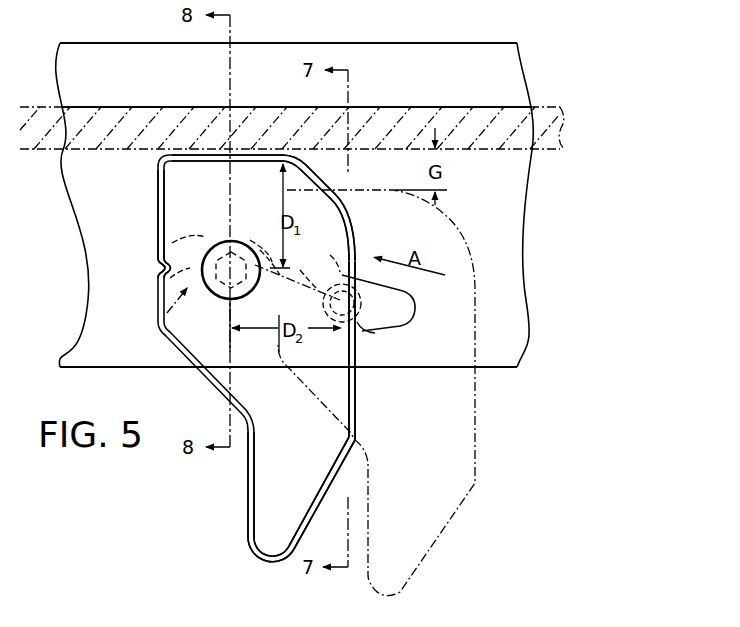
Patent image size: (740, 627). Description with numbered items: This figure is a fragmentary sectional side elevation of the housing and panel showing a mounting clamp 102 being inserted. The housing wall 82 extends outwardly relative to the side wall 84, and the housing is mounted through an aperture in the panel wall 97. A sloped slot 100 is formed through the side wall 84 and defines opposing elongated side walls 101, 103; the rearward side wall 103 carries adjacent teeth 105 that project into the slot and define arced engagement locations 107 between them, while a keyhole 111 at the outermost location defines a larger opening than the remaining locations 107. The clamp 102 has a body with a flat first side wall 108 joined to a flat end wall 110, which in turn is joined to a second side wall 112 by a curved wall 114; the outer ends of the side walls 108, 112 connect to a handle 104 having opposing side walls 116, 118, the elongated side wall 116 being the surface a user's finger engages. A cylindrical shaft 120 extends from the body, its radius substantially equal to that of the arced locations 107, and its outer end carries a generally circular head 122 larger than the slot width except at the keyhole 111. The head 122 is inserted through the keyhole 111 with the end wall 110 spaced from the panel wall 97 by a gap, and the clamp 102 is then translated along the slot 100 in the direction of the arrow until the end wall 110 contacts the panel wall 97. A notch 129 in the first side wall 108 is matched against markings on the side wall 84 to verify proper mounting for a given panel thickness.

The wall 82 is at (420, 43).
The side wall 84 is at (502, 200).
The panel wall 97 is at (548, 152).
The slot 100 is at (400, 289).
The side wall 101 is at (332, 252).
The mounting clamp 102 is at (210, 386).
The side wall 103 is at (167, 313).
The handle 104 is at (250, 547).
The tooth 105 is at (330, 268).
The arced engagement location 107 is at (266, 250).
The first side wall 108 is at (158, 205).
The end wall 110 is at (195, 152).
The keyhole 111 is at (388, 333).
The second side wall 112 is at (356, 390).
The curved wall 114 is at (343, 205).
The side wall 116 is at (248, 497).
The side wall 118 is at (342, 489).
The cylindrical shaft 120 is at (216, 243).
The head 122 is at (202, 252).
The notch 129 is at (162, 269).